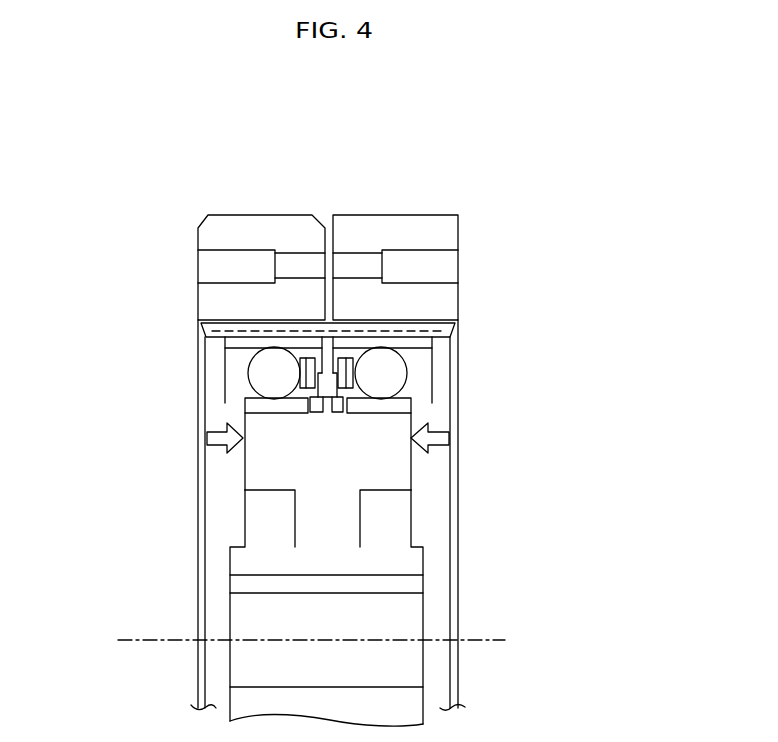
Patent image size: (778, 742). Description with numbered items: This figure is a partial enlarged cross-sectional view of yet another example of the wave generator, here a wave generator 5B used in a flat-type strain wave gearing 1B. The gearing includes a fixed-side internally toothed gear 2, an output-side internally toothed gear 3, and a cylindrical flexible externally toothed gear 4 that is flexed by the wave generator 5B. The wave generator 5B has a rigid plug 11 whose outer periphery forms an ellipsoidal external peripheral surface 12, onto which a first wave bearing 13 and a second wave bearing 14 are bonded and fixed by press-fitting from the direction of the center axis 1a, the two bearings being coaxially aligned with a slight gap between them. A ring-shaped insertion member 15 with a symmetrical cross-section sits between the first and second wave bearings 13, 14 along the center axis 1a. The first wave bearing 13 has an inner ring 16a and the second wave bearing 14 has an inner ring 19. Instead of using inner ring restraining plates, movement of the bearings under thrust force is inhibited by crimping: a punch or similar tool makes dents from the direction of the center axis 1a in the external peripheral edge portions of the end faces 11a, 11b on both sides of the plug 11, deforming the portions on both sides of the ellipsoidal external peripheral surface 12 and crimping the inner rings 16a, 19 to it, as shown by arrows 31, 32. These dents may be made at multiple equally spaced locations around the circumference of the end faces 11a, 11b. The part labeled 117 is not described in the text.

The strain wave gearing 1B is at (530, 202).
The fixed-side internally toothed gear 2 is at (473, 218).
The output-side internally toothed gear 3 is at (198, 222).
The flexible externally toothed gear 4 is at (300, 327).
The wave generator 5B is at (443, 563).
The inner housing portion 117 is at (348, 362).
The second wave bearing 14 is at (242, 368).
The first wave bearing 13 is at (412, 365).
The inner ring 19 is at (257, 407).
The inner ring 16a is at (403, 407).
The insertion member 15 is at (323, 408).
The ellipsoidal external peripheral surface 12 is at (367, 410).
The plug 11 is at (225, 560).
The end face 11a is at (411, 416).
The end face 11b is at (245, 416).
The arrow 31 is at (437, 440).
The arrow 32 is at (215, 440).
The center axis 1a is at (478, 641).